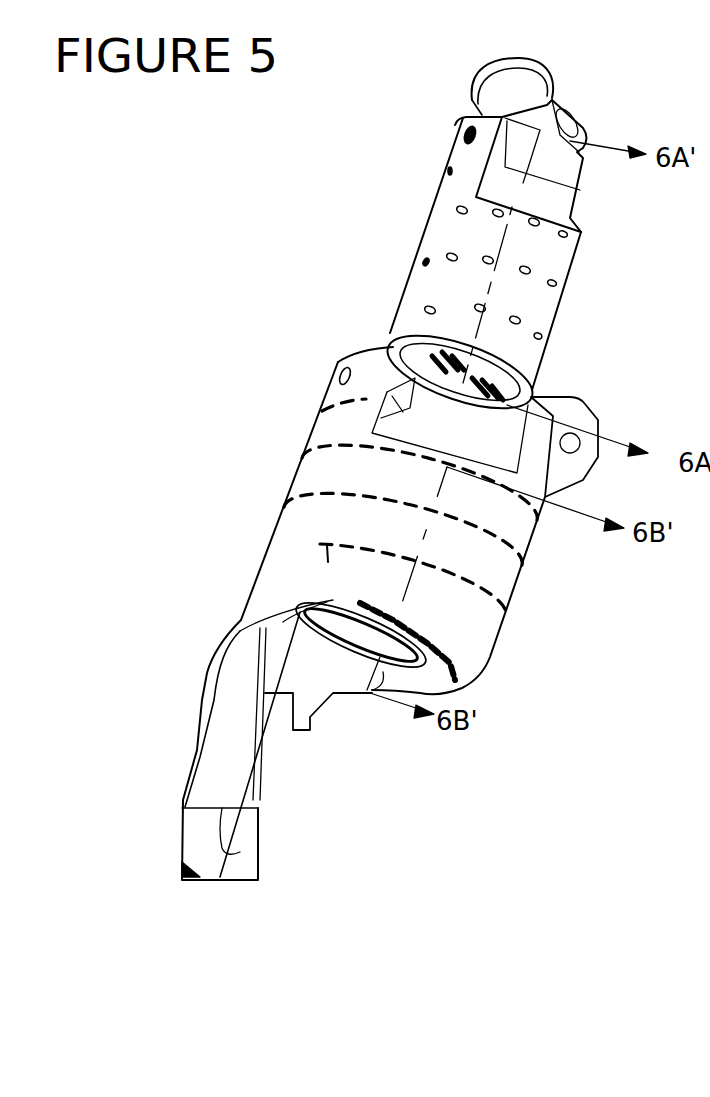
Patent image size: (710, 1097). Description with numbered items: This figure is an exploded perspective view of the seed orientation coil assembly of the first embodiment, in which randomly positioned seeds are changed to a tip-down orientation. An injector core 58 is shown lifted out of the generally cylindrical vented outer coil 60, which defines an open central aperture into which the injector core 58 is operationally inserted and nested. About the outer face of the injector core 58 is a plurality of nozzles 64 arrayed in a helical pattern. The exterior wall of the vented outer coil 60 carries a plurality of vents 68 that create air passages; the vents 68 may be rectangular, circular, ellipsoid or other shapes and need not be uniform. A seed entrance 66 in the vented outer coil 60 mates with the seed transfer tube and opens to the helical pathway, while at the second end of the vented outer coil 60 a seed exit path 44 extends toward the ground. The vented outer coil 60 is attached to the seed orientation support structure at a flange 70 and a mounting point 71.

The seed exit path 44 is at (203, 710).
The injector core 58 is at (410, 276).
The vented outer coil 60 is at (276, 527).
The nozzles 64 is at (432, 215).
The seed entrance 66 is at (339, 368).
The vents 68 is at (312, 454).
The flange 70 is at (311, 731).
The mounting point 71 is at (575, 412).